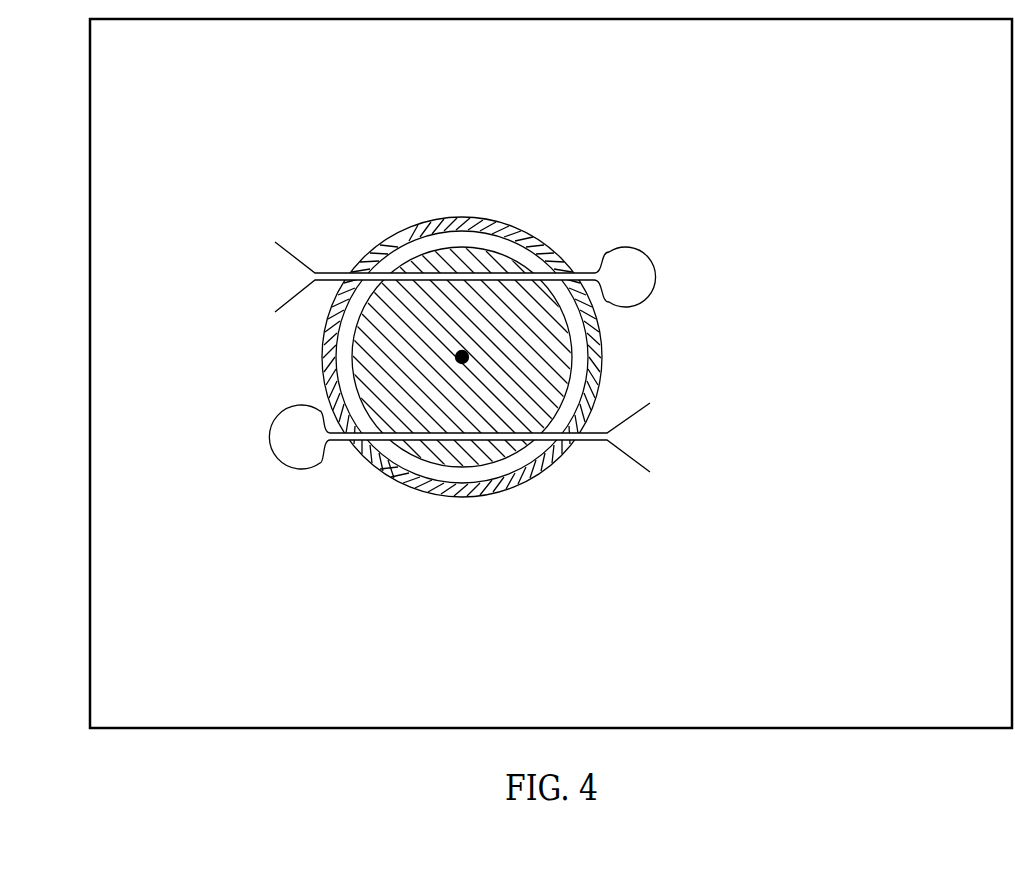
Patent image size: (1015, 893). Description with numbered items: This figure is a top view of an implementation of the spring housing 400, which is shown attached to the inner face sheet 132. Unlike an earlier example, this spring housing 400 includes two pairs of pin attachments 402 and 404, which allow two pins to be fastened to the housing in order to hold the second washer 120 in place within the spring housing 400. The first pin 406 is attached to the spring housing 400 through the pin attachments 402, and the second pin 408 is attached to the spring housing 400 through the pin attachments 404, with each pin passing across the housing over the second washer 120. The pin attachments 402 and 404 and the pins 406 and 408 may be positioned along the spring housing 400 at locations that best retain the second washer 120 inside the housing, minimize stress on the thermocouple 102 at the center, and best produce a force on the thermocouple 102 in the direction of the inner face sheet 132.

The thermocouple 102 is at (462, 362).
The second washer 120 is at (467, 300).
The inner face sheet 132 is at (998, 707).
The spring housing 400 is at (455, 498).
The pin attachments 402 is at (632, 132).
The pin attachments 404 is at (340, 464).
The first pin 406 is at (652, 276).
The second pin 408 is at (276, 456).